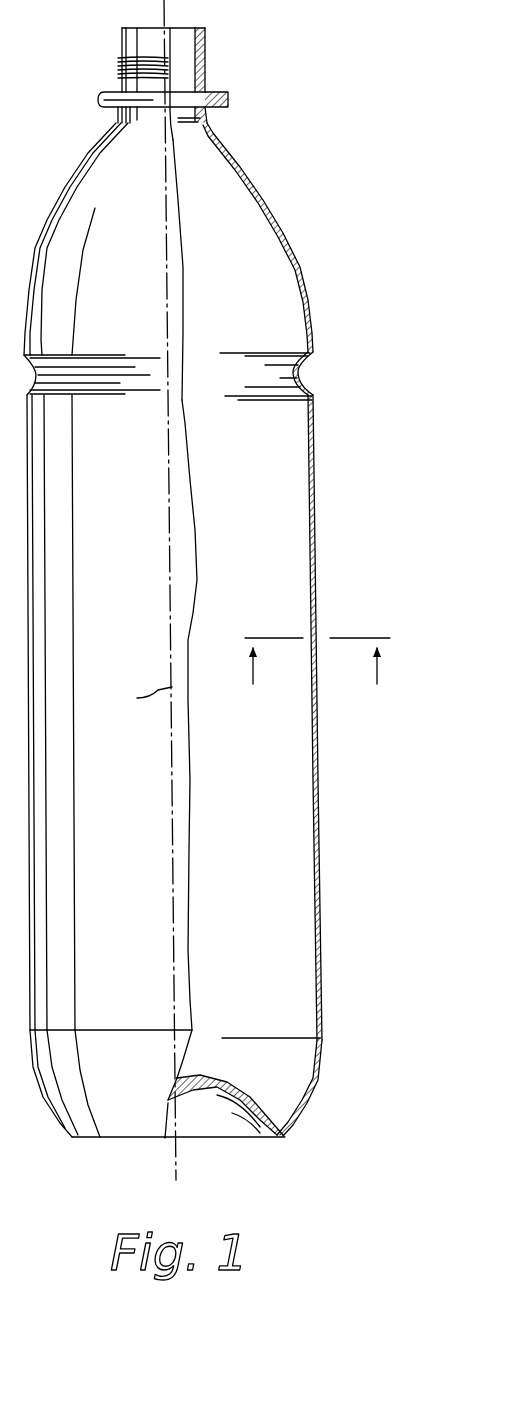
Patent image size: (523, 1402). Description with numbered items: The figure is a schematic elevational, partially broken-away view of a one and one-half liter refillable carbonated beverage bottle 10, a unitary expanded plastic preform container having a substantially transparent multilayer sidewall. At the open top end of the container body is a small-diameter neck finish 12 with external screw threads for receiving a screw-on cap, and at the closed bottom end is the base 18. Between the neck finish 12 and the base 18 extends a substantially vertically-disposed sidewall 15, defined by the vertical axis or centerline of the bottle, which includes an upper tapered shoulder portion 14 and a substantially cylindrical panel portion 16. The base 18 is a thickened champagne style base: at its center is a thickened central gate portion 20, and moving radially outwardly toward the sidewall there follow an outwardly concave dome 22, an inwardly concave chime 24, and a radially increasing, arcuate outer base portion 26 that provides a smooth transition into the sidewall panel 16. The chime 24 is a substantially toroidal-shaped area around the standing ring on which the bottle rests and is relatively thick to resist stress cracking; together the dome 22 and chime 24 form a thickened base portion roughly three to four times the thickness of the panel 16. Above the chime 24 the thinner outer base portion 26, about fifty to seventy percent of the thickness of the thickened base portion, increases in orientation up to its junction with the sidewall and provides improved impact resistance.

The bottle 10 is at (335, 589).
The neck finish 12 is at (205, 71).
The shoulder portion 14 is at (305, 253).
The sidewall 15 is at (318, 493).
The panel portion 16 is at (322, 758).
The base 18 is at (98, 1140).
The central gate portion 20 is at (193, 1100).
The dome 22 is at (232, 1113).
The chime 24 is at (287, 1138).
The outer base portion 26 is at (315, 1102).